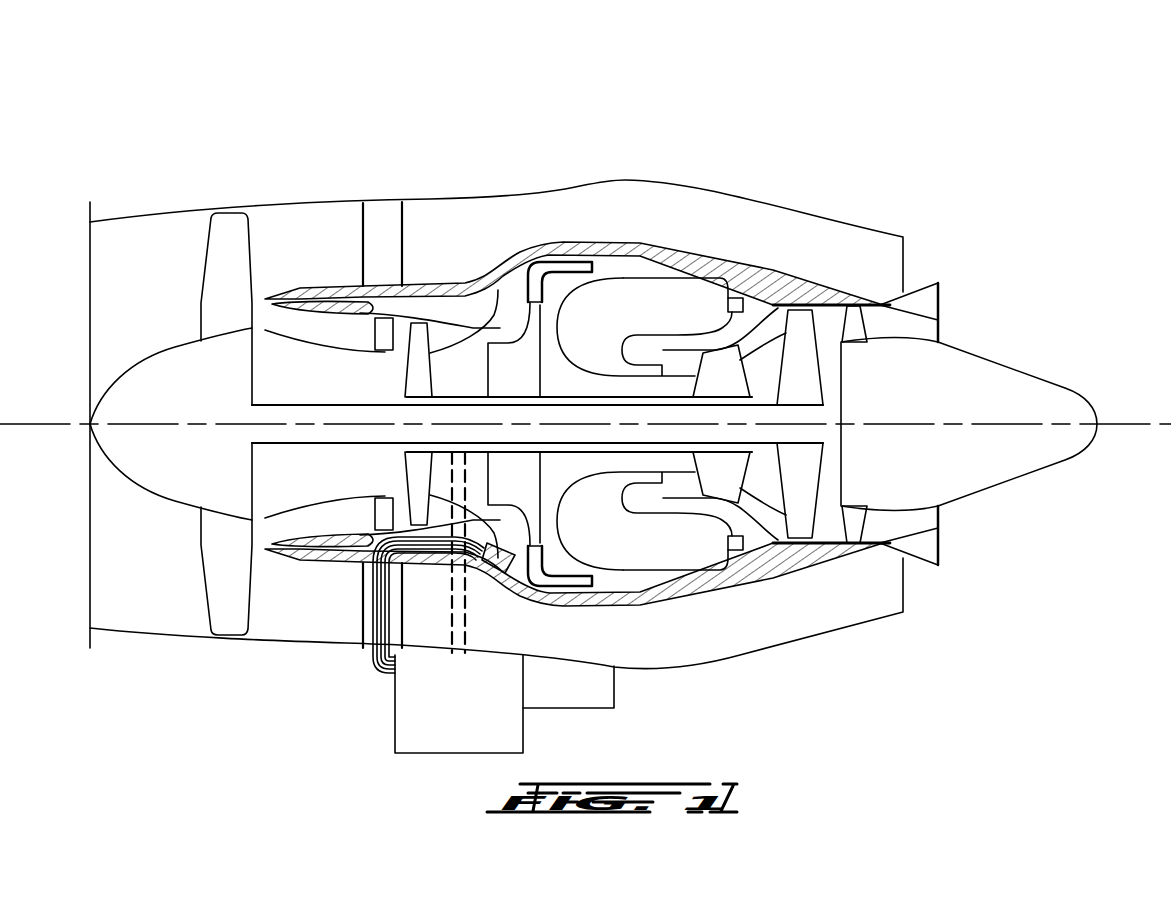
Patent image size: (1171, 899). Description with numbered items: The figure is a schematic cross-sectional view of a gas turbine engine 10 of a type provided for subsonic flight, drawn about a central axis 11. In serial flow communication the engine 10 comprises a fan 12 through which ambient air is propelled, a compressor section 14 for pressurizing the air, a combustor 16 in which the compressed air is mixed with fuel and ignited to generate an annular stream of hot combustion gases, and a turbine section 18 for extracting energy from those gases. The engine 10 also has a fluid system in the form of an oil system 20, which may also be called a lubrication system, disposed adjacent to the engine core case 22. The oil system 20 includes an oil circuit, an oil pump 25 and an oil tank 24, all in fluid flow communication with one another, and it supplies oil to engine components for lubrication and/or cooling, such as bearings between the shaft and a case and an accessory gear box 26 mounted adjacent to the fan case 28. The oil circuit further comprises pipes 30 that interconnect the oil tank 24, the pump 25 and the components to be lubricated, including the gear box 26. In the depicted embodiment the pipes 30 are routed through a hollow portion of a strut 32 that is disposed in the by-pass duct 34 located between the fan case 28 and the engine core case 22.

The gas turbine engine 10 is at (585, 420).
The central longitudinal axis 11 is at (1128, 420).
The fan 12 is at (223, 562).
The compressor section 14 is at (450, 333).
The combustor 16 is at (643, 295).
The turbine section 18 is at (763, 483).
The oil system 20 is at (262, 729).
The engine core case 22 is at (825, 558).
The oil tank 24 is at (530, 575).
The oil pump 25 is at (488, 568).
The accessory gear box 26 is at (430, 740).
The fan case 28 is at (833, 630).
The pipes 30 is at (365, 608).
The strut 32 is at (363, 583).
The by-pass duct 34 is at (850, 238).